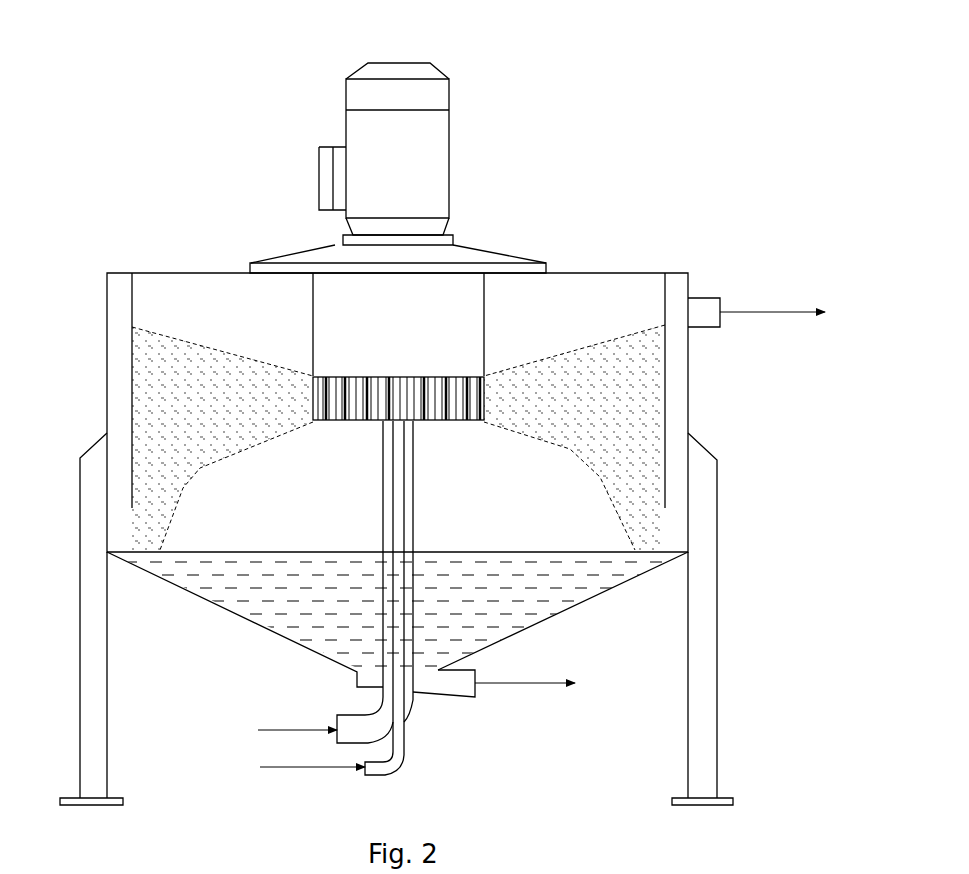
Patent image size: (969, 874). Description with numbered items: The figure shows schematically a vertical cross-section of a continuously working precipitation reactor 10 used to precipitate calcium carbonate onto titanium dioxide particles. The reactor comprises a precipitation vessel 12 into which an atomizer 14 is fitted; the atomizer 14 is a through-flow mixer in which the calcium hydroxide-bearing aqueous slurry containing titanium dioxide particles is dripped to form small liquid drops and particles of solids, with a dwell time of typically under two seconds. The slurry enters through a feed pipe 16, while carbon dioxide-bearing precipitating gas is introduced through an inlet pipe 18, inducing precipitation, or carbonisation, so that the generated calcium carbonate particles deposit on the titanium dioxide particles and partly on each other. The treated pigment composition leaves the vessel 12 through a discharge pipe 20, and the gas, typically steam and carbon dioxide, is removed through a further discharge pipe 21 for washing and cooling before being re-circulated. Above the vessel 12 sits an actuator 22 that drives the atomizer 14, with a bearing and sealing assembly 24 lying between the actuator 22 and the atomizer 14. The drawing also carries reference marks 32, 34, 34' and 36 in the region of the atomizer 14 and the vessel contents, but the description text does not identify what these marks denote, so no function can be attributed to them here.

The precipitation reactor 10 is at (604, 80).
The precipitation vessel 12 is at (230, 607).
The atomizer 14 is at (442, 365).
The feed pipe 16 is at (397, 755).
The inlet pipe 18 is at (347, 722).
The discharge pipe 20 is at (452, 683).
The discharge pipe 21 is at (760, 312).
The actuator 22 is at (440, 153).
The bearing and sealing assembly 24 is at (438, 288).
The impeller 32 is at (312, 411).
The clear liquid zone 34 is at (398, 339).
The sediment zone 34' is at (397, 437).
The sediment boundary 36 is at (203, 457).